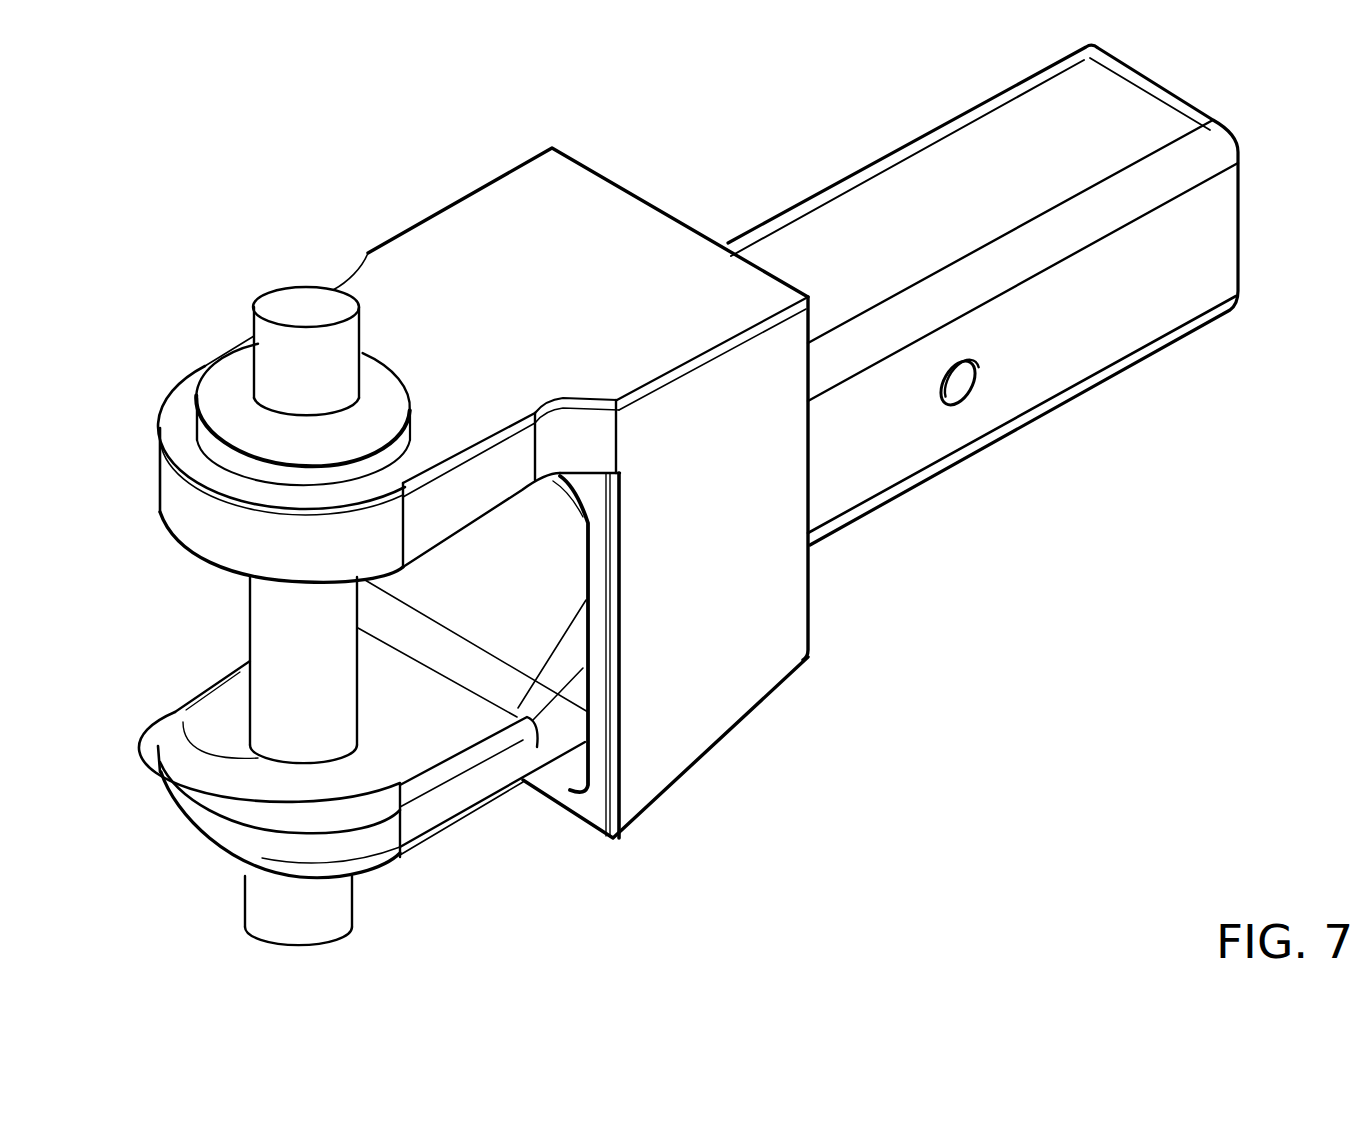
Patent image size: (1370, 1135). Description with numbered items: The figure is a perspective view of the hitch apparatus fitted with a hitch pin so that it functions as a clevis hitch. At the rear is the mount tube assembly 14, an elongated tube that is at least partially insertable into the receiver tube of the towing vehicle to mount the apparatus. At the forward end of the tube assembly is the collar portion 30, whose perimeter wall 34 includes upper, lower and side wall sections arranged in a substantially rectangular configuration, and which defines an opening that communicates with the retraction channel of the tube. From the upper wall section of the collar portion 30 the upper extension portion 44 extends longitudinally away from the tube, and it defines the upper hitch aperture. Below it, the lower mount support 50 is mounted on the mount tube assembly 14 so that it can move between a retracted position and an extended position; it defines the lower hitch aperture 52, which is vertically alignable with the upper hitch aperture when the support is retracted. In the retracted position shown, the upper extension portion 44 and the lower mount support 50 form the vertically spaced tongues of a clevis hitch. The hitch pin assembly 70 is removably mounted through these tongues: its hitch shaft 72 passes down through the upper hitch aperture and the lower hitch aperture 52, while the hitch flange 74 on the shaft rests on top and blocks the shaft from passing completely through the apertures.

The mount tube assembly 14 is at (1065, 402).
The collar portion 30 is at (733, 728).
The perimeter wall 34 is at (765, 617).
The upper extension portion 44 is at (190, 516).
The lower mount support 50 is at (452, 858).
The lower hitch aperture 52 is at (257, 757).
The hitch pin assembly 70 is at (259, 281).
The hitch shaft 72 is at (272, 610).
The hitch flange 74 is at (218, 402).